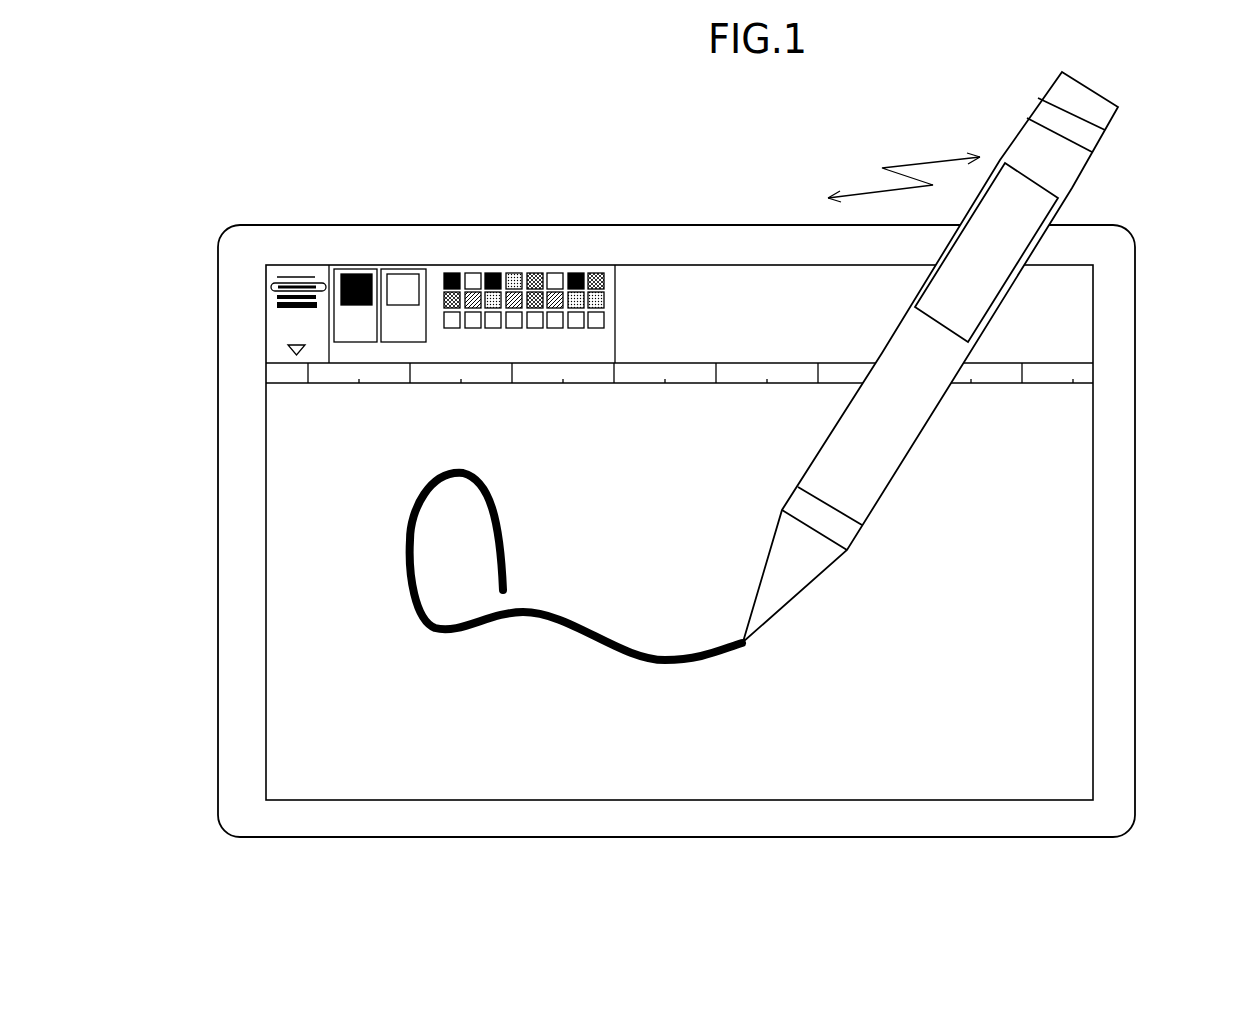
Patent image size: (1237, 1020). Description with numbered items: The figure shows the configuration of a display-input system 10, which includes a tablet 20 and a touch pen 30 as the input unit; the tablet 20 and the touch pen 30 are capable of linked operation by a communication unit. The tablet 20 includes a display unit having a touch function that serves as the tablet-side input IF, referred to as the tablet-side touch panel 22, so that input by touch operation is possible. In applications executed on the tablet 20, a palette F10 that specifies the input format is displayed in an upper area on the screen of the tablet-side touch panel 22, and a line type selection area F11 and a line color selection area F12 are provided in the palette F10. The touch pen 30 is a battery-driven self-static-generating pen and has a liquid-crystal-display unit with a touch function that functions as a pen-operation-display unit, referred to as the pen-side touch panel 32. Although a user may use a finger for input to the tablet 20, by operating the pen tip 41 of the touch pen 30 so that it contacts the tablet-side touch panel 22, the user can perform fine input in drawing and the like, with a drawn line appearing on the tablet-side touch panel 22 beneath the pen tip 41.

The display-input system 10 is at (430, 88).
The tablet 20 is at (268, 223).
The tablet-side touch panel 22 is at (1058, 718).
The touch pen 30 is at (979, 325).
The pen-side touch panel 32 is at (1047, 192).
The pen tip 41 is at (742, 642).
The palette F10 is at (739, 258).
The line type selection area F11 is at (300, 265).
The line color selection area F12 is at (563, 265).